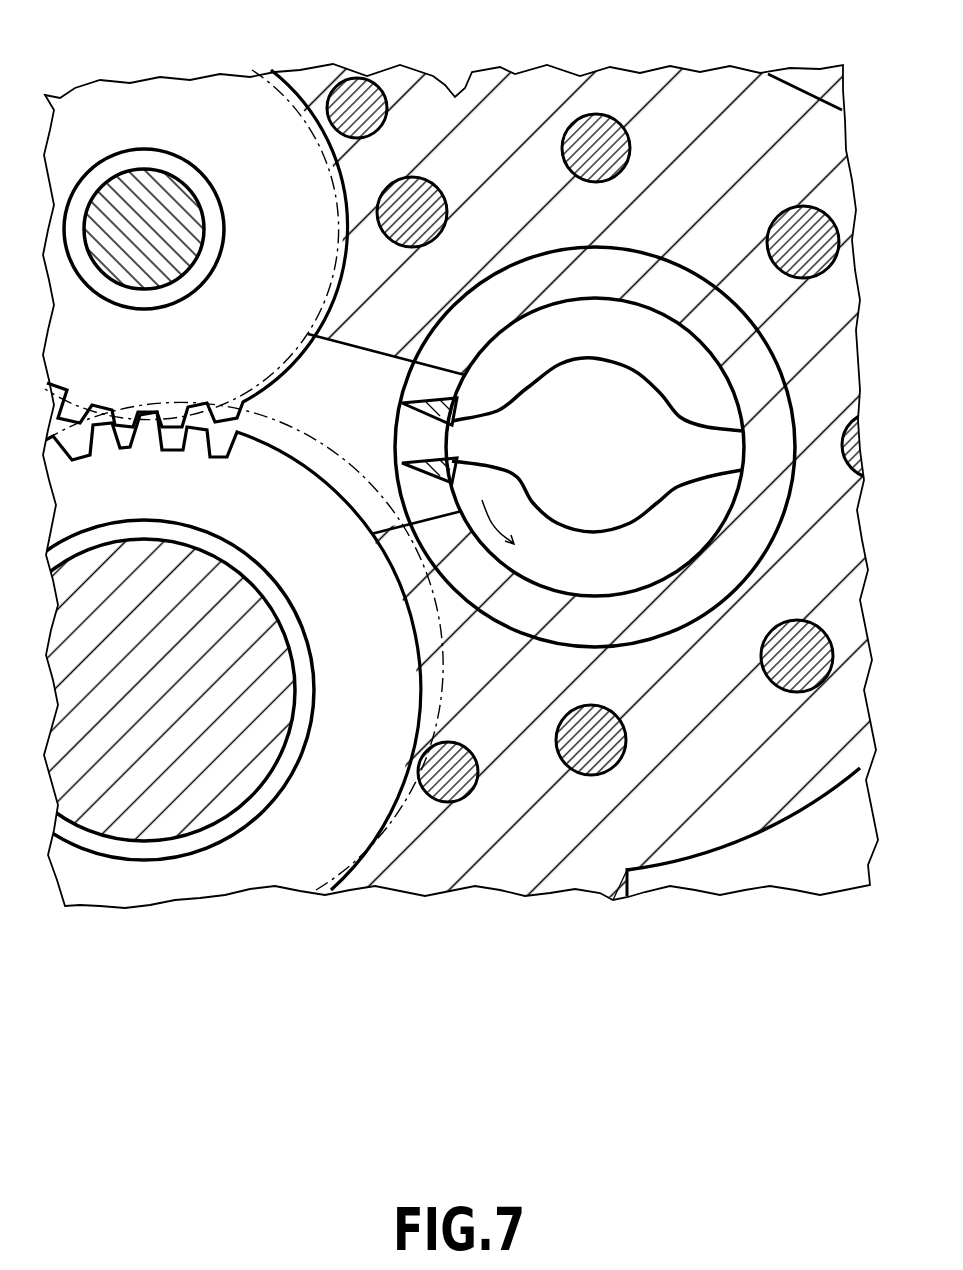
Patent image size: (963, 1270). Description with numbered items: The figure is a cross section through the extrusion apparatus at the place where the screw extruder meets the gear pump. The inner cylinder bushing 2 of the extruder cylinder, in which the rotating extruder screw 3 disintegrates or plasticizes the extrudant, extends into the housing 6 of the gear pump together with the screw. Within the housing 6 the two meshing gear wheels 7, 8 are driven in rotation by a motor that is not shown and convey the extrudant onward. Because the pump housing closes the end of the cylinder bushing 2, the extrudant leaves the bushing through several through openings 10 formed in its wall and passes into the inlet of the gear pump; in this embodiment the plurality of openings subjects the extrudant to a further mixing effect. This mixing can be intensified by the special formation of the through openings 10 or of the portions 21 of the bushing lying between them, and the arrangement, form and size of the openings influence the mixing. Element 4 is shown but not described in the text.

The gear wheel 8 is at (112, 122).
The gear wheel 7 is at (202, 875).
The portions between the through openings 21 is at (435, 405).
The through opening 10 is at (440, 505).
The cylinder bushing 2 is at (507, 592).
The extruder screw 3 is at (593, 453).
The rotor lobe 4 is at (718, 458).
The housing of the gear pump 6 is at (722, 752).